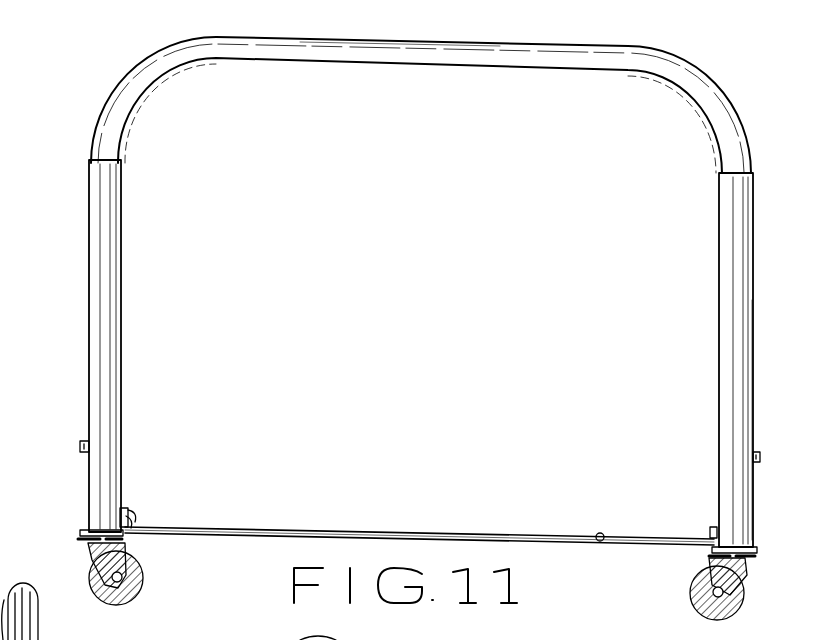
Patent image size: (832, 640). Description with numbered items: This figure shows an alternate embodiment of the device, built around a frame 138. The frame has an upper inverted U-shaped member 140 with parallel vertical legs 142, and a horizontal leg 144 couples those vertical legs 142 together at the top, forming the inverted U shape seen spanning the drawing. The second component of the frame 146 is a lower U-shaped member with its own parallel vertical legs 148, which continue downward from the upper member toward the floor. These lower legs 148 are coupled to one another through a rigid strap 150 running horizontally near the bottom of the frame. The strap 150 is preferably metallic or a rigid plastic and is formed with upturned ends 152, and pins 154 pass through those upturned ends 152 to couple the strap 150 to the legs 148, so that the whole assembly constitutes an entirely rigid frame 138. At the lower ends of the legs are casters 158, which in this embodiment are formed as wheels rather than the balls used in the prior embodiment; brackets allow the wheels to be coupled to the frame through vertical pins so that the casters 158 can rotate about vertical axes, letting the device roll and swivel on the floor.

The frame 138 is at (382, 91).
The upper inverted U-shaped member 140 is at (605, 59).
The vertical legs 142 is at (100, 150).
The horizontal leg 144 is at (348, 48).
The second component of the frame 146 is at (757, 440).
The vertical legs 148 is at (746, 403).
The rigid strap 150 is at (600, 541).
The upturned ends 152 is at (122, 513).
The pins 154 is at (135, 530).
The casters 158 is at (139, 589).